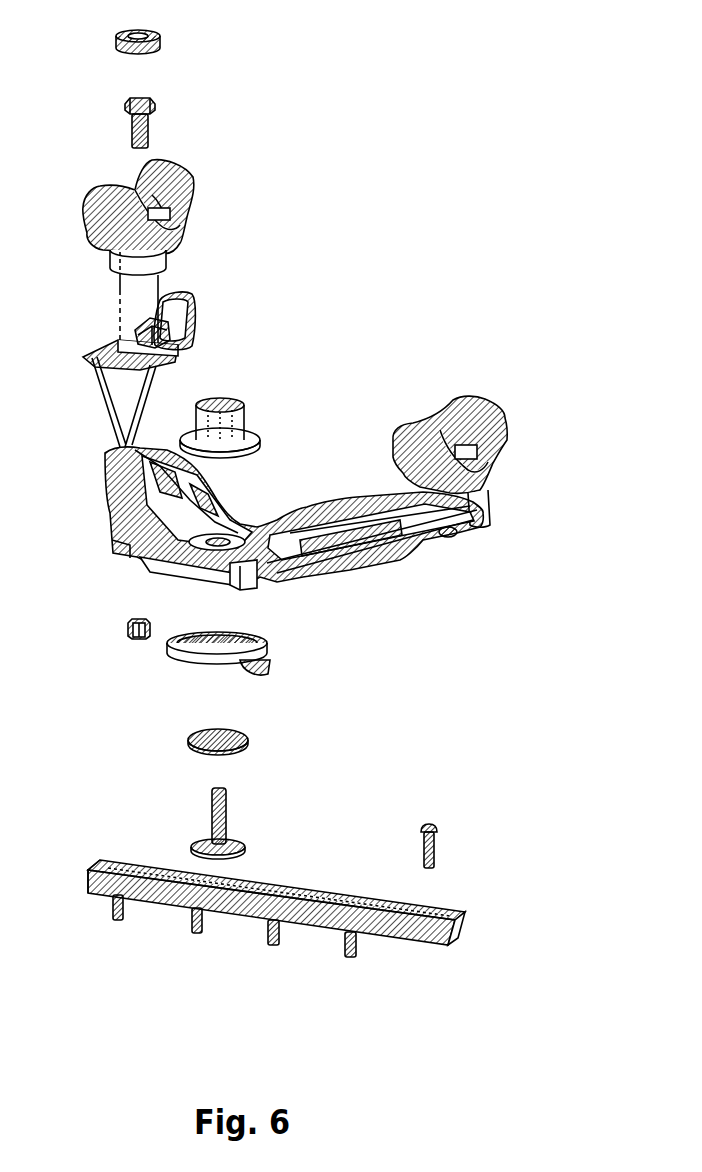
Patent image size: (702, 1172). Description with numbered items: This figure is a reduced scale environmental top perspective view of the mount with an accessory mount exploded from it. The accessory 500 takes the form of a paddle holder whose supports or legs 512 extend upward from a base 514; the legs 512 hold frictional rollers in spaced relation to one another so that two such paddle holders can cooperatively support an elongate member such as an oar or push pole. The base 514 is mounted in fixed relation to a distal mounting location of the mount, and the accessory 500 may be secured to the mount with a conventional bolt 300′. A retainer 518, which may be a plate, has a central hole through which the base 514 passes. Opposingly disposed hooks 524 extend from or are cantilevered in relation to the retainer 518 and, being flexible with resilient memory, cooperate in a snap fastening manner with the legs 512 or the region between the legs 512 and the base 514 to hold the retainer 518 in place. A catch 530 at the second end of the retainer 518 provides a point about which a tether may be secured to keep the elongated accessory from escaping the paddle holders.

The conventional bolt 300′ is at (168, 114).
The accessory 500 is at (509, 382).
The legs 512 is at (188, 229).
The base 514 is at (117, 277).
The retainer 518 is at (188, 354).
The hooks 524 is at (180, 357).
The catch 530 is at (192, 316).